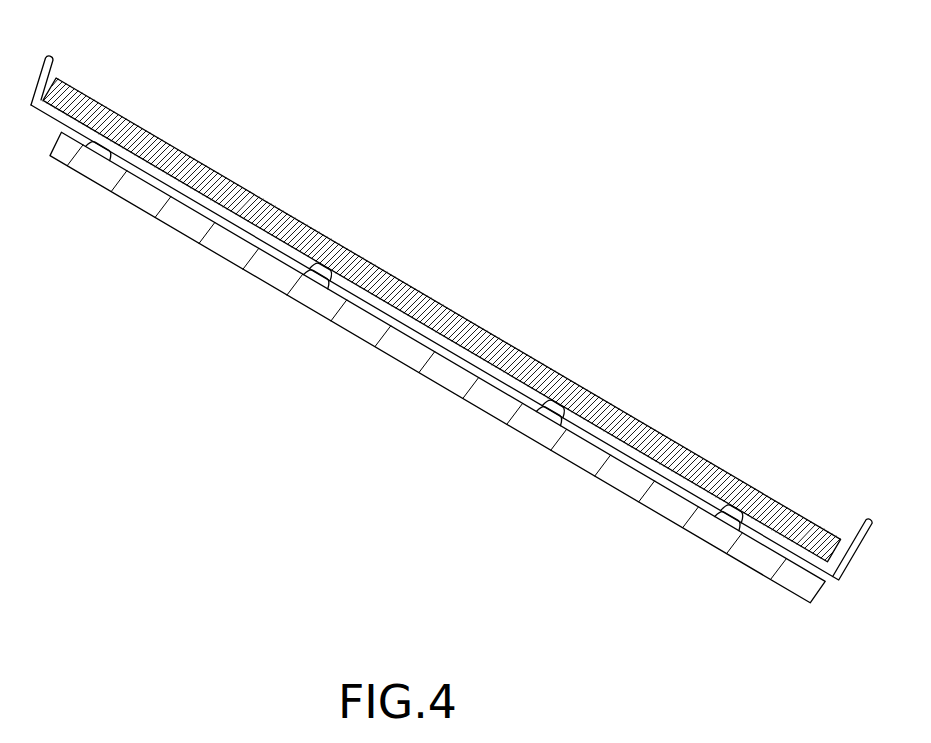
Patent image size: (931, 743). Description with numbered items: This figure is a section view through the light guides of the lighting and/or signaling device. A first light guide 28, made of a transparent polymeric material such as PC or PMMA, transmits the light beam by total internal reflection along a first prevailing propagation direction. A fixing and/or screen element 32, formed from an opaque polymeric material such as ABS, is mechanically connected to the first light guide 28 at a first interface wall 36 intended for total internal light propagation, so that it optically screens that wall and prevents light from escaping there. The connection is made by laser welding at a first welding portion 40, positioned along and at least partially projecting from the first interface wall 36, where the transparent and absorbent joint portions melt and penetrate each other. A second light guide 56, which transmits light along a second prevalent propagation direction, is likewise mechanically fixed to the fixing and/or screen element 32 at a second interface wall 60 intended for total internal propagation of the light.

The first light guide 28 is at (668, 440).
The fixing and/or screen element 32 is at (835, 575).
The first interface wall 36 is at (230, 182).
The first welding portion 40 is at (353, 268).
The second light guide 56 is at (587, 457).
The second interface wall 60 is at (400, 338).